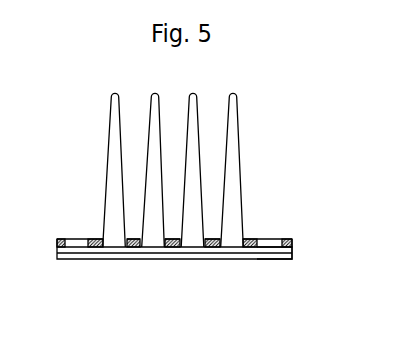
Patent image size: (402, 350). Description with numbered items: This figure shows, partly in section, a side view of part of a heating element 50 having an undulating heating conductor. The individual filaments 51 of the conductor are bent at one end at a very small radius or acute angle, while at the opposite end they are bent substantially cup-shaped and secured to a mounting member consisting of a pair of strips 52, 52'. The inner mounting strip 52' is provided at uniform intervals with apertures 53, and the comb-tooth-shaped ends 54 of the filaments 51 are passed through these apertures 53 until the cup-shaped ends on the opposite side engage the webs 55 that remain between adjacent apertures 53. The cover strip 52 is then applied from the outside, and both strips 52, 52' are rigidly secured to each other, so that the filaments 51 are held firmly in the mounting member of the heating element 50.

The heating element 50 is at (180, 190).
The filaments 51 is at (240, 177).
The cover strip 52 is at (180, 256).
The inner mounting strip 52' is at (289, 232).
The apertures 53 is at (232, 247).
The comb-tooth-shaped ends 54 is at (112, 99).
The webs 55 is at (95, 253).